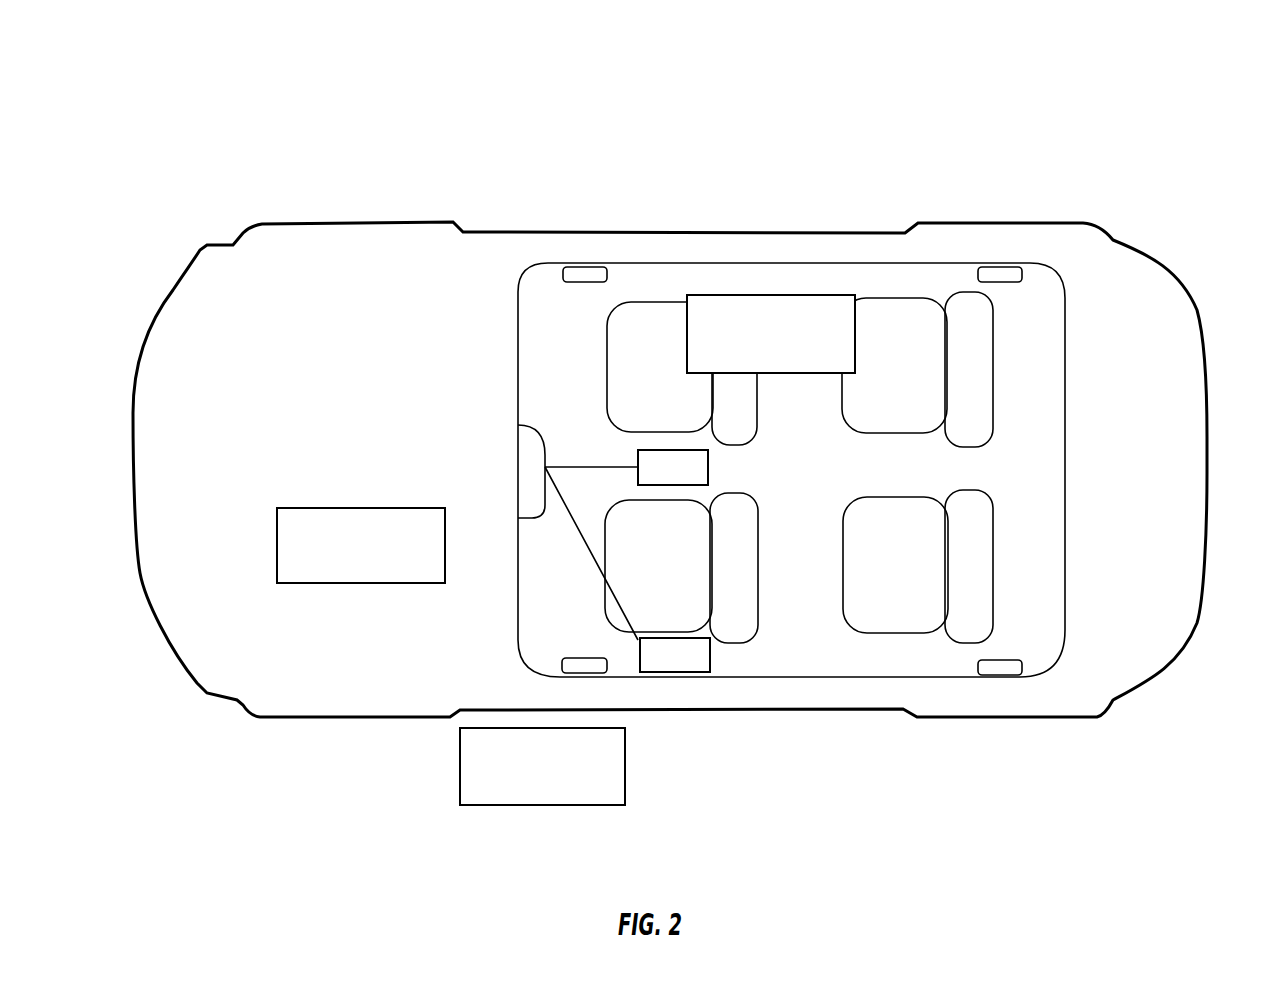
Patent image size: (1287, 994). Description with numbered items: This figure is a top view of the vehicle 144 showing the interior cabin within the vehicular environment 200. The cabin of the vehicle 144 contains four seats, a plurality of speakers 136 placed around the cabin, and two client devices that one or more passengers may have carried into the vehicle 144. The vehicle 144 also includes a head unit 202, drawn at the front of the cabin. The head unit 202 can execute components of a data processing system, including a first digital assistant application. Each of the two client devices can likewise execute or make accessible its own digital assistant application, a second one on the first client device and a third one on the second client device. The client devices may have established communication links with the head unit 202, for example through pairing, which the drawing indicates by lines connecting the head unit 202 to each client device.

The vehicular environment 200 is at (667, 50).
The vehicle 144 is at (947, 227).
The speakers 136 is at (572, 270).
The head unit 202 is at (530, 472).